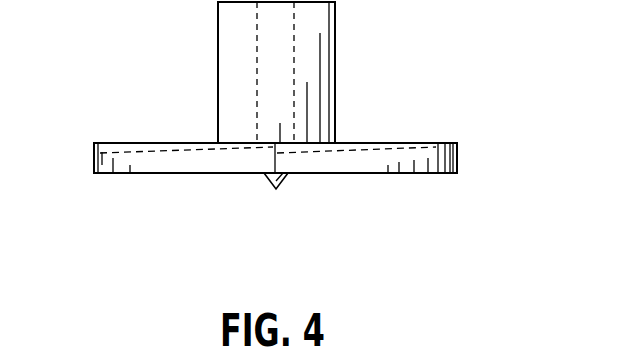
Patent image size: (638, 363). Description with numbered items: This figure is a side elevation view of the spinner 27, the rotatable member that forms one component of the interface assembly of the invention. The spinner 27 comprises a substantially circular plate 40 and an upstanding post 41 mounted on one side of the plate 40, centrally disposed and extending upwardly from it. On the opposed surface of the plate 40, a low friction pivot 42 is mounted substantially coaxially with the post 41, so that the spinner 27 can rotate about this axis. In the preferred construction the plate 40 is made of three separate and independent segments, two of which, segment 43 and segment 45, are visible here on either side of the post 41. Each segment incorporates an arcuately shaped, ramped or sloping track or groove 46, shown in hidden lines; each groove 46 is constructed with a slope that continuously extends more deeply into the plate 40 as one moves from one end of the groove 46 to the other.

The spinner 27 is at (183, 84).
The plate 40 is at (462, 161).
The post 41 is at (337, 62).
The low friction pivot 42 is at (271, 186).
The segment 43 is at (390, 170).
The segment 45 is at (170, 167).
The groove 46 is at (125, 145).